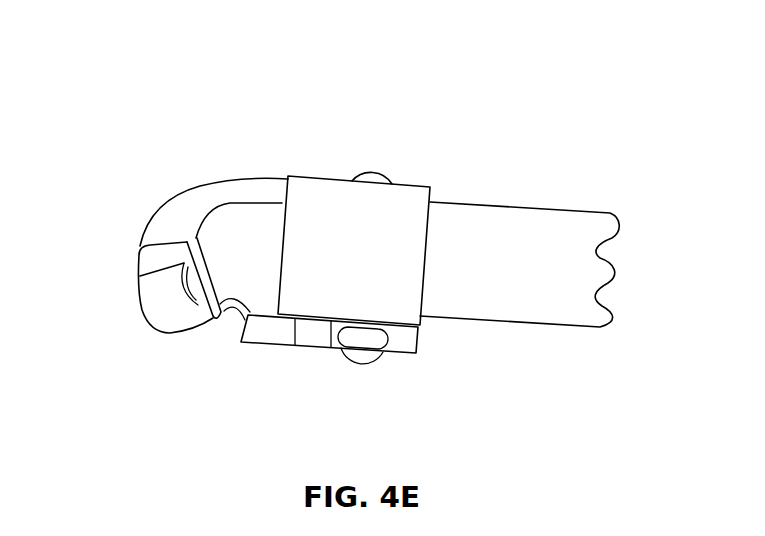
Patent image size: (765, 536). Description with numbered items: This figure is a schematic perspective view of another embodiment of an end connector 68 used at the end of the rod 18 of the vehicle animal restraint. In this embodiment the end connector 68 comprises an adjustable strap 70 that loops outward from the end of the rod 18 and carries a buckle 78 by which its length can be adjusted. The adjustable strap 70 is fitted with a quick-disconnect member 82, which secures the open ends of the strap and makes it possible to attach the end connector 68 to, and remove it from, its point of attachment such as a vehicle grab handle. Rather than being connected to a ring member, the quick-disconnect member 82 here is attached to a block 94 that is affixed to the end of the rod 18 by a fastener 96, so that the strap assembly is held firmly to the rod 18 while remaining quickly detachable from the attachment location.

The rod 18 is at (532, 267).
The end connector 68 is at (410, 158).
The adjustable strap 70 is at (223, 190).
The buckle 78 is at (138, 263).
The quick-disconnect member 82 is at (310, 345).
The block 94 is at (365, 267).
The fastener 96 is at (370, 172).